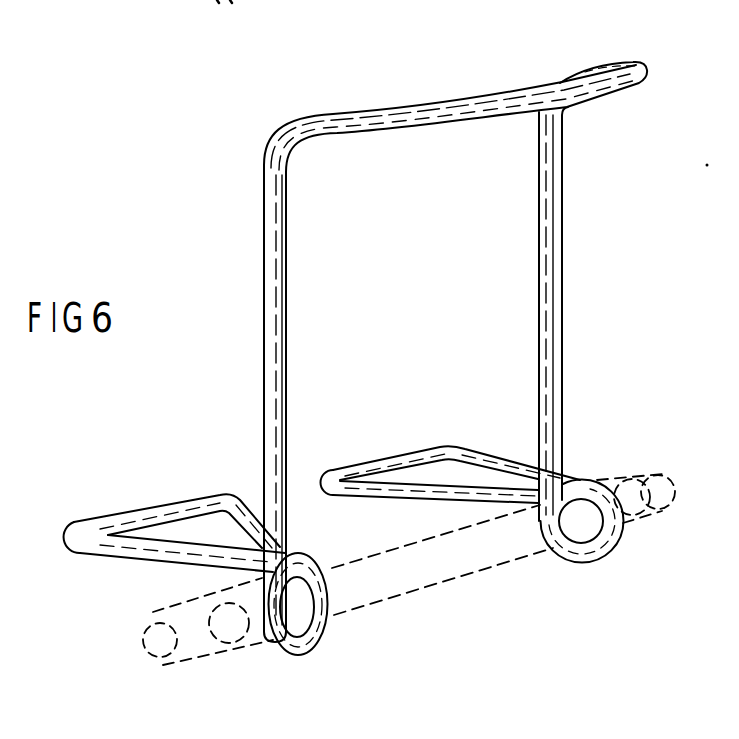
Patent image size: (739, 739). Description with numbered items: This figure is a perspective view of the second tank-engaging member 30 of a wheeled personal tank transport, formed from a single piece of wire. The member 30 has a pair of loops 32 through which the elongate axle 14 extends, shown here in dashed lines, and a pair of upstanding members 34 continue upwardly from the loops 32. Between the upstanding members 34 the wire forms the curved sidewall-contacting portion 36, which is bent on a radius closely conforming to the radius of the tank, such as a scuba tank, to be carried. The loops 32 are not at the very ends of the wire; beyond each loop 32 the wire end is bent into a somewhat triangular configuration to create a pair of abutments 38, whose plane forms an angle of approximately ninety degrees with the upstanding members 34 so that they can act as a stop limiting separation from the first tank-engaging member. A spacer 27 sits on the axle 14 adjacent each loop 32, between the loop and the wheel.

The elongate axle 14 is at (155, 652).
The spacer 27 is at (248, 647).
The second tank-engaging member 30 is at (221, 252).
The loops 32 is at (305, 641).
The upstanding members 34 is at (267, 335).
The curved sidewall-contacting portion 36 is at (533, 92).
The abutments 38 is at (137, 513).